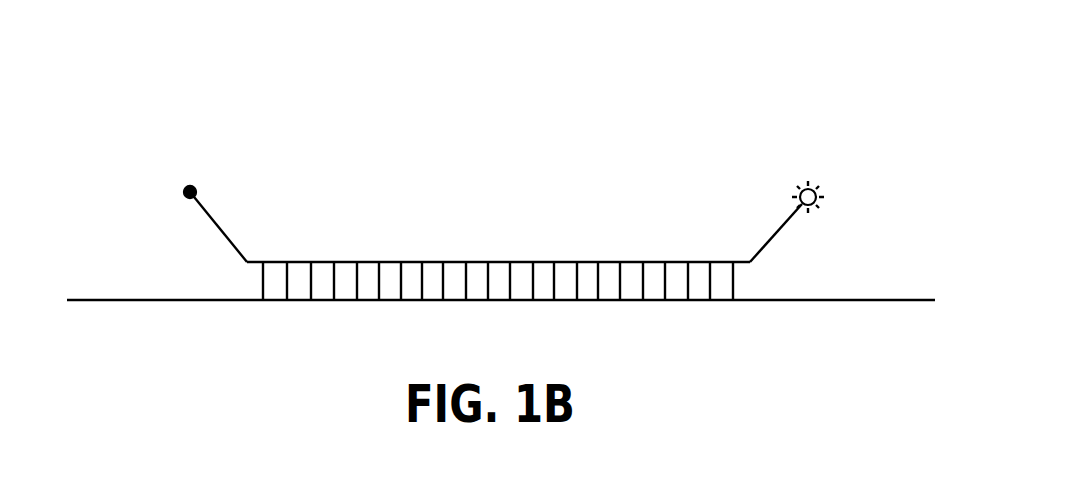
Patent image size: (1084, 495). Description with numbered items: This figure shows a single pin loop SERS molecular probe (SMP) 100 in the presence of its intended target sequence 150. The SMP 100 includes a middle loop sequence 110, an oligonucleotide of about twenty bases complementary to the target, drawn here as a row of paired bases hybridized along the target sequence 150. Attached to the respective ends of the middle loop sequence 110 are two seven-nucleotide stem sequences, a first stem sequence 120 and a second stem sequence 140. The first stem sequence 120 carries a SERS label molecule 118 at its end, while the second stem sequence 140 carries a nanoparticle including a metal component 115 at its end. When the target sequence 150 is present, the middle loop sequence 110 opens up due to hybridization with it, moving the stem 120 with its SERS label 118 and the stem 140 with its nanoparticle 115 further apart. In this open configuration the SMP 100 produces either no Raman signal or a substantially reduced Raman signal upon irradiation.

The single pin loop SERS molecular probe 100 is at (487, 197).
The middle loop sequence 110 is at (560, 262).
The nanoparticle including a metal component 115 is at (185, 185).
The SERS label molecule 118 is at (812, 180).
The first stem sequence 120 is at (773, 242).
The second stem sequence 140 is at (228, 237).
The target sequence 150 is at (167, 302).